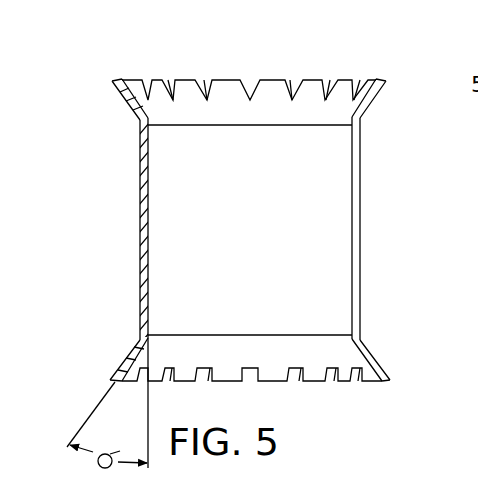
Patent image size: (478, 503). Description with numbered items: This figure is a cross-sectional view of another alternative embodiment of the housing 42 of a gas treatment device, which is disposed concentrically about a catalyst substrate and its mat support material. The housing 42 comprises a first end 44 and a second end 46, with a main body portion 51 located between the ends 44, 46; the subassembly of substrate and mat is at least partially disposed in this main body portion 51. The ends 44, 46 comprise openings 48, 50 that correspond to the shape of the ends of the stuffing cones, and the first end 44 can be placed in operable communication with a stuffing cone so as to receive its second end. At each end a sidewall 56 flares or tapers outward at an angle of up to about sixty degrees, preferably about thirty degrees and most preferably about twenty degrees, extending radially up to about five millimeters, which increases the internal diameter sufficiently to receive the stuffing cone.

The housing 42 is at (325, 60).
The first end 44 is at (392, 95).
The second end 46 is at (398, 386).
The opening 48 is at (215, 80).
The opening 50 is at (320, 381).
The main body portion 51 is at (123, 144).
The sidewall 56 is at (100, 78).